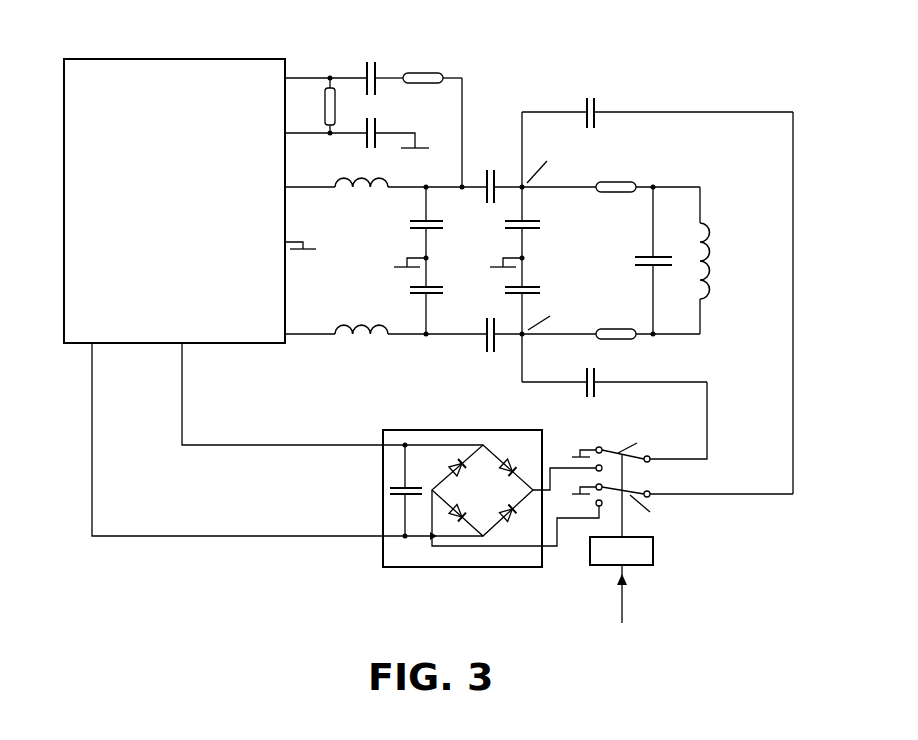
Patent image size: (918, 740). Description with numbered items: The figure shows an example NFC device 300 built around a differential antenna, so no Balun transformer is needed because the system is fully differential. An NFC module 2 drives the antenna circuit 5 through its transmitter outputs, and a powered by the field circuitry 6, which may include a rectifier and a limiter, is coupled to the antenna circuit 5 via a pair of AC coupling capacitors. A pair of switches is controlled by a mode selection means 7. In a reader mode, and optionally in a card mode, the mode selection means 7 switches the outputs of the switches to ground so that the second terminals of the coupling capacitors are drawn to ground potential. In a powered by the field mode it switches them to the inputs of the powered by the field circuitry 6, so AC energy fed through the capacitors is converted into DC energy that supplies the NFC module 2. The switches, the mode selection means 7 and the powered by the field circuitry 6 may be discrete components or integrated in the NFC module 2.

The NFC circuit arrangement 300 is at (690, 51).
The NFC module 2 is at (147, 57).
The antenna circuit 5 is at (712, 170).
The powered by the field circuitry 6 is at (382, 552).
The mode selection means 7 is at (653, 548).